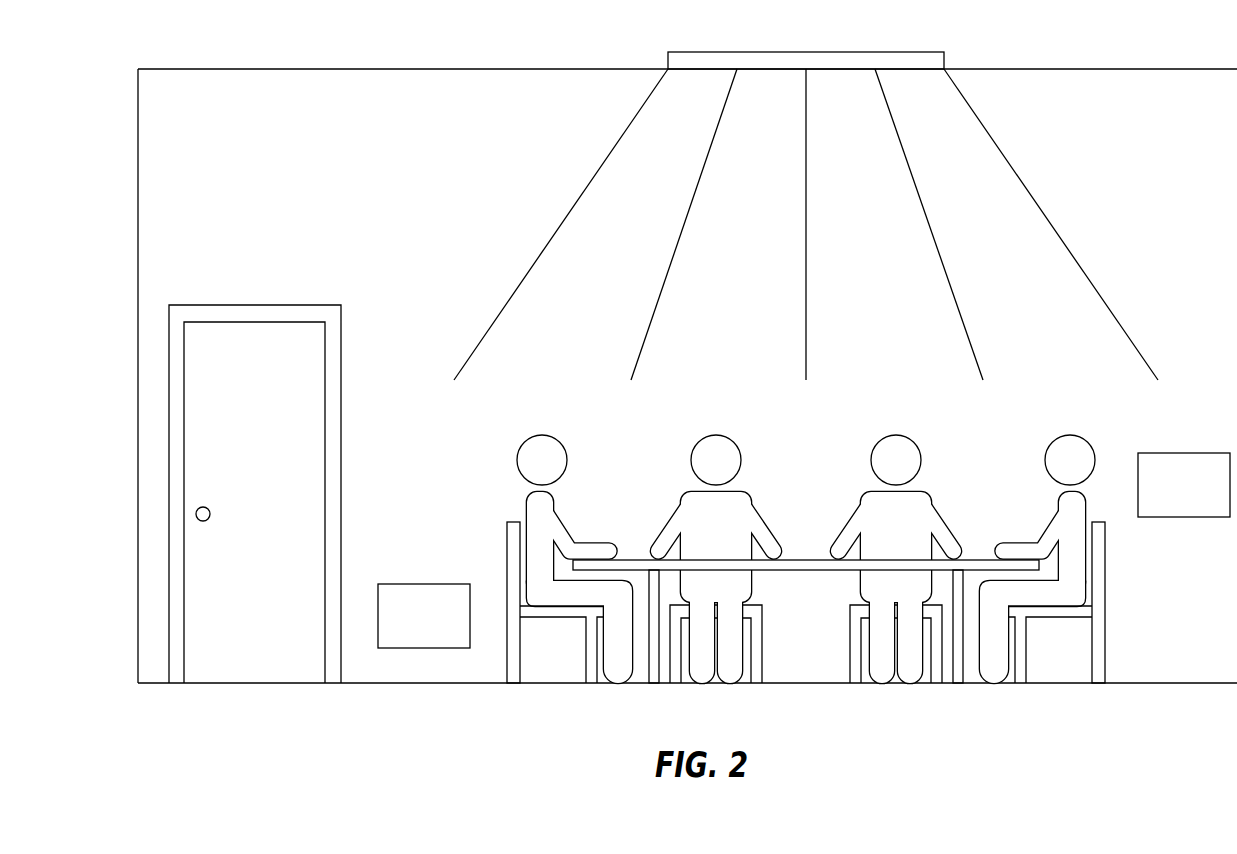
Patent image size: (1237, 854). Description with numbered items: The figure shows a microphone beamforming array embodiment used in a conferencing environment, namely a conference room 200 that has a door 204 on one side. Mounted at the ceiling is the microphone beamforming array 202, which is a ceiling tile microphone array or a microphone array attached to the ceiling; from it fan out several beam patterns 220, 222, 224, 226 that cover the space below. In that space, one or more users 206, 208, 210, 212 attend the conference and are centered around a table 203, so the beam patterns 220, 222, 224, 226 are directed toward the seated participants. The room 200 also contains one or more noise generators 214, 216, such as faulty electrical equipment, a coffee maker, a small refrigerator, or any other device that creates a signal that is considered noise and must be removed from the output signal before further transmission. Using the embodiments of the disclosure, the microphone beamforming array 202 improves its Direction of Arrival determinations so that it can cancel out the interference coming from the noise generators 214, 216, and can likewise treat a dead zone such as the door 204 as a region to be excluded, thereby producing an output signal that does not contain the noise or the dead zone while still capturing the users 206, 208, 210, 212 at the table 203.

The conference room 200 is at (212, 113).
The microphone beamforming array 202 is at (841, 52).
The table 203 is at (783, 657).
The door 204 is at (232, 440).
The user 206 is at (527, 510).
The user 208 is at (680, 501).
The user 210 is at (859, 501).
The user 212 is at (1060, 501).
The noise generator 214 is at (447, 627).
The noise generator 216 is at (1162, 499).
The beam pattern 220 is at (587, 353).
The beam pattern 222 is at (750, 353).
The beam pattern 224 is at (912, 353).
The beam pattern 226 is at (1074, 353).